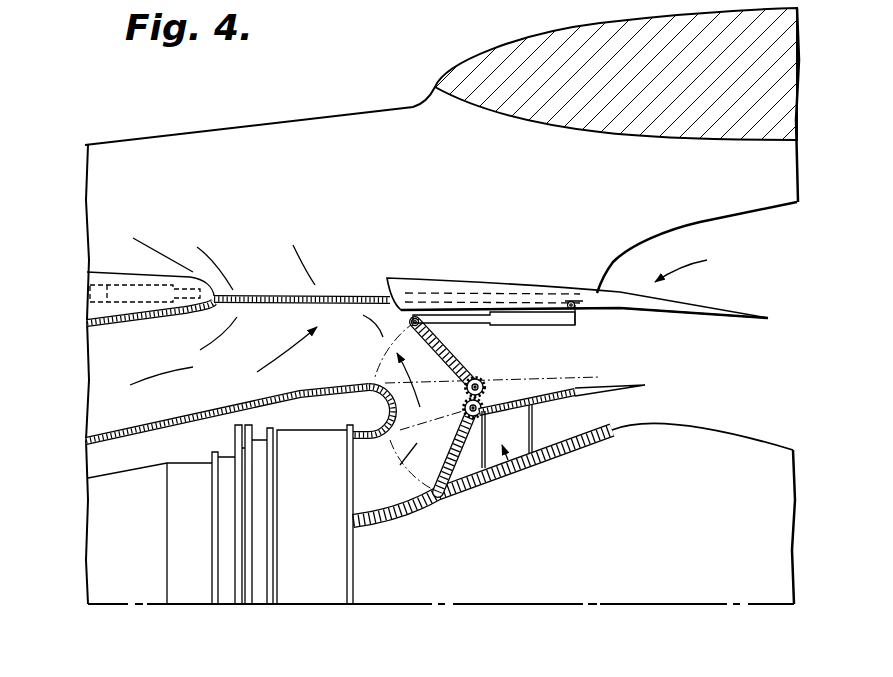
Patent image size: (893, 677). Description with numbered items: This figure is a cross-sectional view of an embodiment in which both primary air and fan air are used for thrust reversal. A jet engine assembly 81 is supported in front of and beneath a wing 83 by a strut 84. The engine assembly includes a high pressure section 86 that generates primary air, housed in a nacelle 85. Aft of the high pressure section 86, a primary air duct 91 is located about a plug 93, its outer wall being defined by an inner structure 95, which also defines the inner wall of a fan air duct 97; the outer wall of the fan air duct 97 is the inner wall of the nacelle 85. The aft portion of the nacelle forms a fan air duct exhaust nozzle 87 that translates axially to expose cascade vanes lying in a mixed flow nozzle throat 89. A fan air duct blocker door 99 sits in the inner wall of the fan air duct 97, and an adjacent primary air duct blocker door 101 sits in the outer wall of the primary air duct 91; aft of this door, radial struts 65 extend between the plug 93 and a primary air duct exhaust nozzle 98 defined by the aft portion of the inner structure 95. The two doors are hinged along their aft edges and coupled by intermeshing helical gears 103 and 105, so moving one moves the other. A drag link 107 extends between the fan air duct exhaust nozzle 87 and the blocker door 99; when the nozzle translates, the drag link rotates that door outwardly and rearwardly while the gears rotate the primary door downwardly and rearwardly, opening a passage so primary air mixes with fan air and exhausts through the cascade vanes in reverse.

The radial struts 65 is at (513, 488).
The jet engine assembly 81 is at (699, 264).
The wing 83 is at (505, 60).
The strut 84 is at (300, 121).
The nacelle 85 is at (100, 271).
The high pressure section 86 is at (233, 583).
The fan air duct exhaust nozzle 87 is at (707, 306).
The mixed flow nozzle throat 89 is at (341, 296).
The primary air duct 91 is at (397, 505).
The plug 93 is at (653, 583).
The inner structure 95 is at (385, 424).
The fan air duct 97 is at (356, 359).
The primary air duct exhaust nozzle 98 is at (604, 385).
The fan air duct blocker door 99 is at (458, 355).
The primary air duct blocker door 101 is at (456, 472).
The intermeshing helical gear 103 is at (484, 400).
The intermeshing helical gear 105 is at (532, 398).
The drag link 107 is at (515, 313).